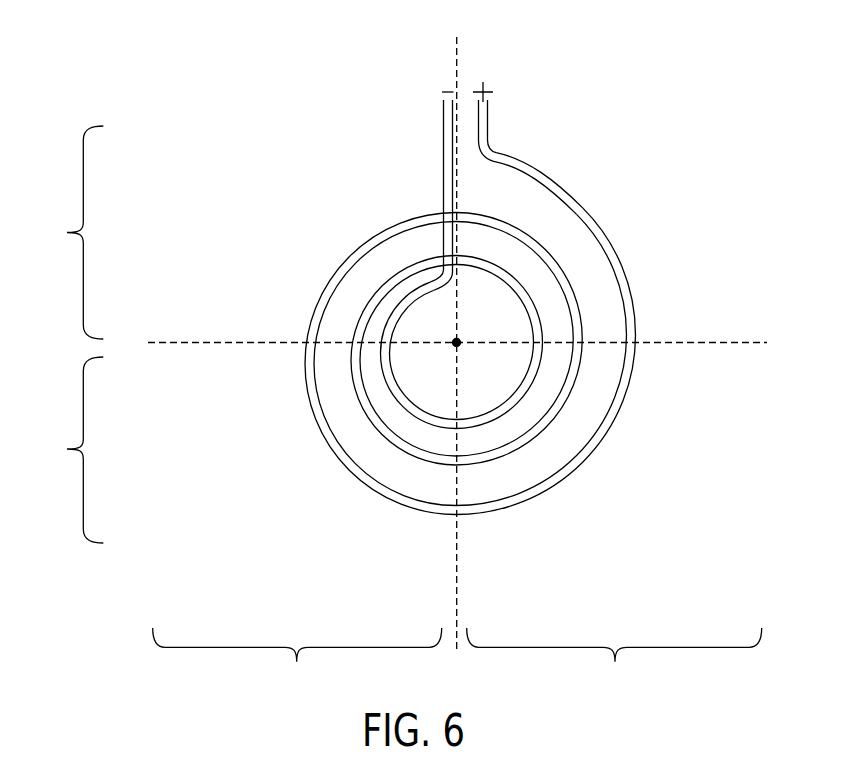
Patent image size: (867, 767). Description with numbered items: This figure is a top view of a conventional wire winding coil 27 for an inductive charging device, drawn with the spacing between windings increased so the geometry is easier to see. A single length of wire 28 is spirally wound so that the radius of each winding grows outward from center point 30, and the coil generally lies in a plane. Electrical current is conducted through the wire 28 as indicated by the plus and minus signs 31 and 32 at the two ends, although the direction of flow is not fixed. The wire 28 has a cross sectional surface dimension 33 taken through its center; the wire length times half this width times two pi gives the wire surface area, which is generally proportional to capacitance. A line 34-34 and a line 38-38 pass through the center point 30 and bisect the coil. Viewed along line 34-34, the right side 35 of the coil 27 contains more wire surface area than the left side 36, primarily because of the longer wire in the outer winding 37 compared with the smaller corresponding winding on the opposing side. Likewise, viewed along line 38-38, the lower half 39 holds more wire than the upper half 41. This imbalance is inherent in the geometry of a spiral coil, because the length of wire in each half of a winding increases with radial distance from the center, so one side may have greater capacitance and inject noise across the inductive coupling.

The wire winding coil 27 is at (673, 185).
The wire 28 is at (612, 463).
The center point 30 is at (452, 346).
The plus sign 31 is at (490, 82).
The minus sign 32 is at (442, 82).
The cross sectional surface dimension 33 is at (587, 290).
The line 34- 34 is at (456, 346).
The right side 35 is at (614, 661).
The left side 36 is at (297, 661).
The outer winding 37 is at (531, 533).
The line 38- 38 is at (453, 344).
The lower half 39 is at (72, 450).
The upper half 41 is at (72, 232).